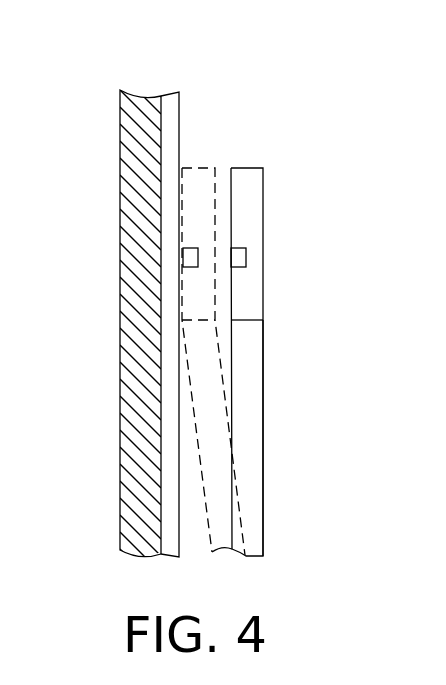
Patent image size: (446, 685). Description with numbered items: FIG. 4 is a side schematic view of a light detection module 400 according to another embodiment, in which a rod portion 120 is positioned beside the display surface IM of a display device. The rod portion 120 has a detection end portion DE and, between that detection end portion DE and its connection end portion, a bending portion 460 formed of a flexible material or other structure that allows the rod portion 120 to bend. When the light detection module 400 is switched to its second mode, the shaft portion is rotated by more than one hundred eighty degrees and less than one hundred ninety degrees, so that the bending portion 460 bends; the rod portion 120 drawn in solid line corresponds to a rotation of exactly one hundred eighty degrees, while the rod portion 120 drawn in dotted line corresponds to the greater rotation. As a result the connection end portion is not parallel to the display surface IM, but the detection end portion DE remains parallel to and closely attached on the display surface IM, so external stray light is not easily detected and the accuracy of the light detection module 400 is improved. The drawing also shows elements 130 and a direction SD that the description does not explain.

The display surface IM is at (181, 119).
The detection end portion DE is at (243, 204).
The optical element 130 is at (246, 258).
The bending portion 460 is at (269, 320).
The rod portion 120 is at (255, 471).
The sliding direction SD is at (227, 263).
The light detection module 400 is at (370, 580).